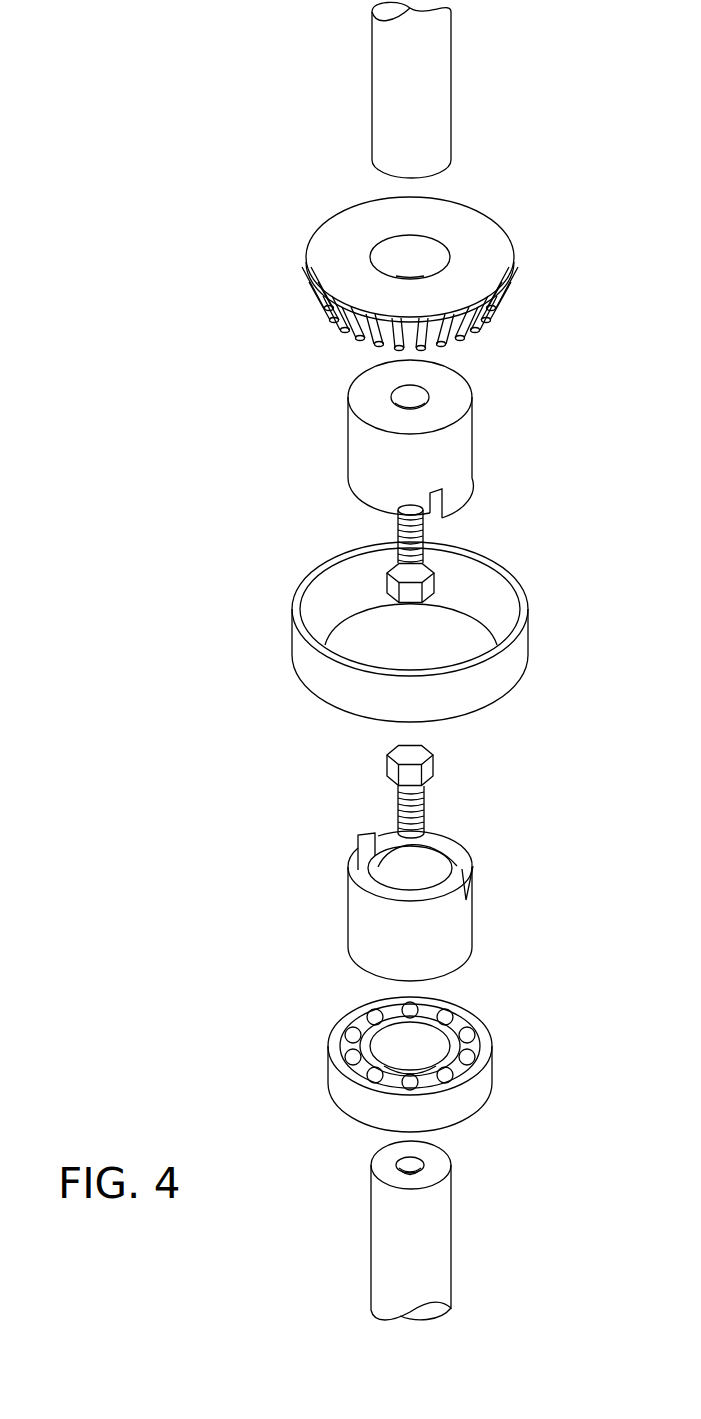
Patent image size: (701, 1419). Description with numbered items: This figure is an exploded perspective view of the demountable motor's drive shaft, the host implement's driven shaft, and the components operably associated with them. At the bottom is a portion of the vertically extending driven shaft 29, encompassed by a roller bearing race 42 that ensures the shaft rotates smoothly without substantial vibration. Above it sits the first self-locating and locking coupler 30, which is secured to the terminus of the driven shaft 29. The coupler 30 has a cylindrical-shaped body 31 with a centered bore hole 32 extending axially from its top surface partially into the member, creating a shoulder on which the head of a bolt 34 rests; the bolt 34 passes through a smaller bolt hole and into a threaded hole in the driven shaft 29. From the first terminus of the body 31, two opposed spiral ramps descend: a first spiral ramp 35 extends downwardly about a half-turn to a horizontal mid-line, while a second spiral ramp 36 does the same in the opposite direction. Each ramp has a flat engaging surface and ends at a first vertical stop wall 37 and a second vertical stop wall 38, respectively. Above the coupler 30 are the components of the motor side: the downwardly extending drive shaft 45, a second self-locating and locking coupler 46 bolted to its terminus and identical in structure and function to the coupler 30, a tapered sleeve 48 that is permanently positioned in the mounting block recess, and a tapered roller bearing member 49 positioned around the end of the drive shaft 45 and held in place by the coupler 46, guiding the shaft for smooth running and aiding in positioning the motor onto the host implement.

The driven shaft 29 is at (445, 1231).
The first self-locating and locking coupler 30 is at (435, 893).
The cylindrical-shaped body 31 is at (472, 925).
The centered bore hole 32 is at (420, 858).
The bolt 34 is at (434, 770).
The first spiral ramp 35 is at (358, 880).
The second spiral ramp 36 is at (462, 860).
The first vertical stop wall 37 is at (358, 848).
The second vertical stop wall 38 is at (470, 884).
The roller bearing race 42 is at (490, 1088).
The drive shaft 45 is at (445, 78).
The second self-locating and locking coupler 46 is at (468, 452).
The tapered sleeve 48 is at (528, 650).
The tapered roller bearing member 49 is at (510, 247).